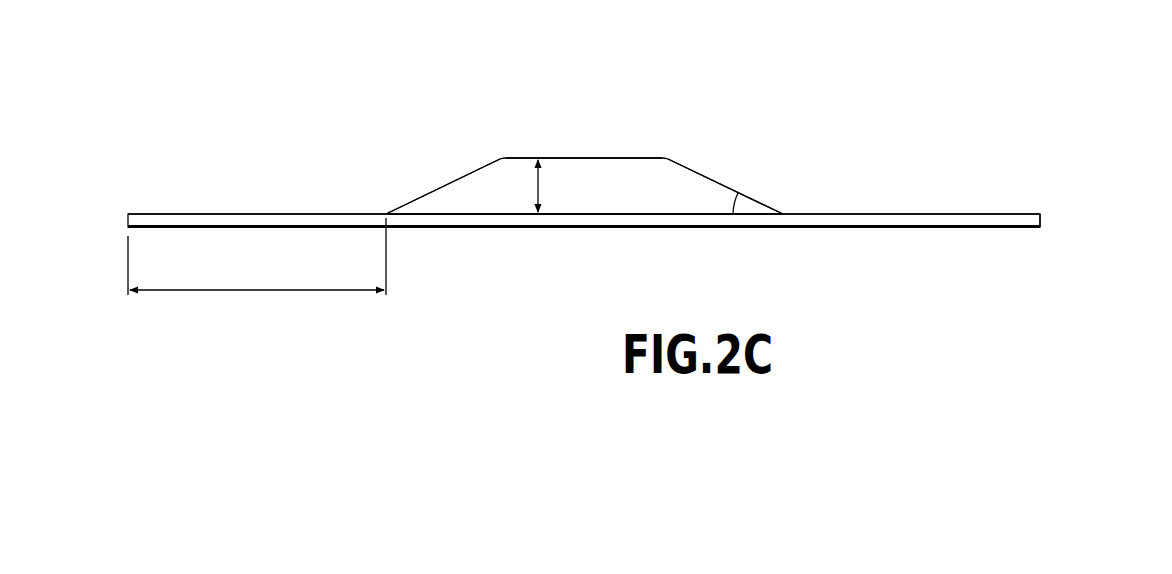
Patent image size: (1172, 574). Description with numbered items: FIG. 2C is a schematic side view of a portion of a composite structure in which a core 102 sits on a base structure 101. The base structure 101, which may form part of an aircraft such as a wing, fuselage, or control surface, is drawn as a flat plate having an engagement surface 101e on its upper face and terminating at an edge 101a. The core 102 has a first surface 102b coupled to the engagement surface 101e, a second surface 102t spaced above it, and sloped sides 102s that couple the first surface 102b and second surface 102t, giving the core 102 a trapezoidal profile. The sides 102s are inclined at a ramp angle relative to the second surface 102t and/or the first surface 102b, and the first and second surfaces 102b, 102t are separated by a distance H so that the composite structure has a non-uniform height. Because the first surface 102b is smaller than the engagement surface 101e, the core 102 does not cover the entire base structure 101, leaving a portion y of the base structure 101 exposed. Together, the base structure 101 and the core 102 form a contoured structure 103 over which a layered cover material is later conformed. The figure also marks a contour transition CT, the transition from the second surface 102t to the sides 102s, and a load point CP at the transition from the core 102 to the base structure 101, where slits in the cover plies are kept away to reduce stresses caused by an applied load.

The base structure 101 is at (903, 220).
The engagement surface 101e is at (942, 213).
The edge 101a is at (1040, 218).
The core 102 is at (512, 168).
The second surface 102t is at (620, 153).
The sides 102s is at (430, 191).
The first surface 102b is at (676, 214).
The contoured structure 103 is at (903, 98).
The contour transition CT is at (747, 93).
The load point CP is at (787, 208).
The distance H is at (536, 186).
The portion y is at (258, 292).